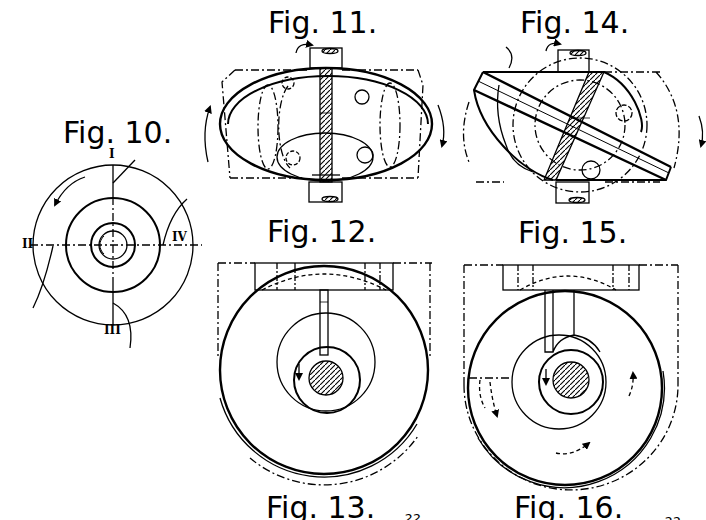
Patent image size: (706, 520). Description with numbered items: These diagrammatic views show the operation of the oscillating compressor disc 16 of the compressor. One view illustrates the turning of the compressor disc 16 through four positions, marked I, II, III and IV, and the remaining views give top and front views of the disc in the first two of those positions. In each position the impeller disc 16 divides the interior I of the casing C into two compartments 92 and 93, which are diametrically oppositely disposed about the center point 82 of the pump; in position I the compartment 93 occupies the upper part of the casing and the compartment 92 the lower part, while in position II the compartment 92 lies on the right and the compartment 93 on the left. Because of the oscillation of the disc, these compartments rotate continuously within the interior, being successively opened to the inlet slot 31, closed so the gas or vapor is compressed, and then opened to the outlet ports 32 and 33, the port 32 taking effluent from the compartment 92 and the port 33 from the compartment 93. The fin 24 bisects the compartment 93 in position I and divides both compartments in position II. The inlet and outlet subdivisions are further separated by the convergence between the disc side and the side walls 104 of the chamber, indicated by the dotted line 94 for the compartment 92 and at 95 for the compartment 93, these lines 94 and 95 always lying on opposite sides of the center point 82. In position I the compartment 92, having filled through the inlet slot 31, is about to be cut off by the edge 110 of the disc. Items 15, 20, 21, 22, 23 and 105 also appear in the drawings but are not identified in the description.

In FIG. 10, the shaft 15 is at (121, 257).
In FIG. 11, the shaft 15 is at (342, 54).
In FIG. 14, the shaft 15 is at (589, 54).
In FIG. 12, the shaft 15 is at (311, 393).
In FIG. 15, the shaft 15 is at (571, 397).
In FIG. 10, the compressor disc 16 is at (63, 288).
In FIG. 11, the compressor disc 16 is at (252, 148).
In FIG. 14, the compressor disc 16 is at (500, 72).
In FIG. 12, the compressor disc 16 is at (246, 408).
In FIG. 15, the compressor disc 16 is at (533, 453).
In FIG. 10, the hub 20 is at (97, 275).
In FIG. 11, the hub 20 is at (345, 144).
In FIG. 14, the hub 20 is at (539, 178).
In FIG. 12, the hub 20 is at (355, 338).
In FIG. 15, the hub 20 is at (584, 415).
In FIG. 14, the inclined band 21 is at (619, 78).
In FIG. 12, the support frame 22 is at (250, 275).
In FIG. 15, the support frame 22 is at (497, 278).
In FIG. 12, the bracket 23 is at (392, 275).
In FIG. 15, the bracket 23 is at (641, 275).
In FIG. 11, the fin 24 is at (320, 172).
In FIG. 14, the fin 24 is at (545, 189).
In FIG. 12, the fin 24 is at (320, 333).
In FIG. 15, the fin 24 is at (549, 325).
In FIG. 11, the inlet slot 31 is at (272, 127).
In FIG. 14, the inlet slot 31 is at (538, 79).
In FIG. 12, the inlet slot 31 is at (285, 270).
In FIG. 15, the inlet slot 31 is at (532, 272).
In FIG. 11, the outlet port 32 is at (372, 88).
In FIG. 14, the outlet port 32 is at (631, 107).
In FIG. 11, the outlet port 33 is at (371, 171).
In FIG. 14, the outlet port 33 is at (601, 183).
In FIG. 12, the outlet port 33 is at (372, 268).
In FIG. 15, the outlet port 33 is at (621, 270).
In FIG. 10, the center point 82 is at (115, 243).
In FIG. 11, the center point 82 is at (333, 114).
In FIG. 14, the center point 82 is at (586, 126).
In FIG. 12, the center point 82 is at (342, 374).
In FIG. 15, the center point 82 is at (586, 374).
In FIG. 11, the compartment 92 is at (422, 83).
In FIG. 14, the compartment 92 is at (670, 82).
In FIG. 11, the compartment 93 is at (246, 181).
In FIG. 14, the compartment 93 is at (493, 182).
In FIG. 10, the convergence line 94 is at (113, 255).
In FIG. 14, the convergence line 94 is at (501, 51).
In FIG. 12, the convergence line 94 is at (320, 305).
In FIG. 15, the convergence line 94 is at (494, 380).
In FIG. 14, the convergence line 95 is at (651, 183).
In FIG. 11, the side walls 104 is at (248, 70).
In FIG. 14, the side walls 104 is at (496, 187).
In FIG. 11, the guide 105 is at (230, 78).
In FIG. 14, the guide 105 is at (461, 176).
In FIG. 11, the edge 110 is at (418, 101).
In FIG. 12, the edge 110 is at (287, 466).
In FIG. 15, the edge 110 is at (658, 423).